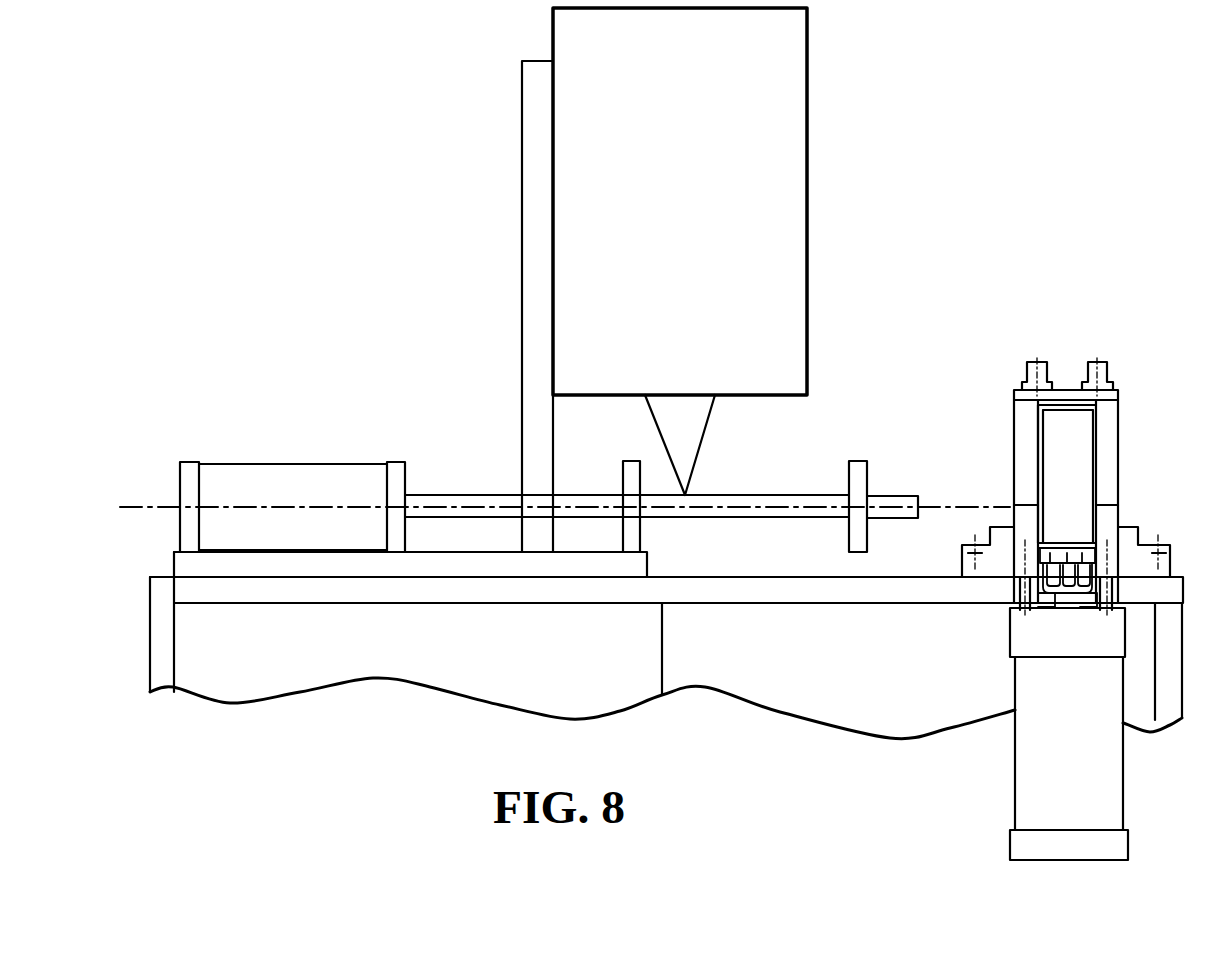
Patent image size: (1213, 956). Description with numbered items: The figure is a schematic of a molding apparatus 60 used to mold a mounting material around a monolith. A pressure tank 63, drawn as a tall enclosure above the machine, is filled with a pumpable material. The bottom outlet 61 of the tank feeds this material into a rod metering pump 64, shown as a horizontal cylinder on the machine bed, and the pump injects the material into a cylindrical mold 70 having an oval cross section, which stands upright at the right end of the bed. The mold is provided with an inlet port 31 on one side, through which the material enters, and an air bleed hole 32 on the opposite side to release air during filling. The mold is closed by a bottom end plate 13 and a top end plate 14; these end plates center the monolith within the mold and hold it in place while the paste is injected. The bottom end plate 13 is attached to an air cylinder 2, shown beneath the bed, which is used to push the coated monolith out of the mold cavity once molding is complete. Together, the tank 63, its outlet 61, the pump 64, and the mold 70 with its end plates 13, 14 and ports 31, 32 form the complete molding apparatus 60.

The air cylinder 2 is at (1113, 797).
The bottom end plate 13 is at (1043, 555).
The top end plate 14 is at (1068, 388).
The inlet port 31 is at (1014, 505).
The air bleed hole 32 is at (1118, 505).
The molding apparatus 60 is at (1105, 167).
The bottom outlet 61 is at (696, 465).
The pressure tank 63 is at (783, 135).
The rod metering pump 64 is at (328, 462).
The cylindrical mold 70 is at (1083, 440).